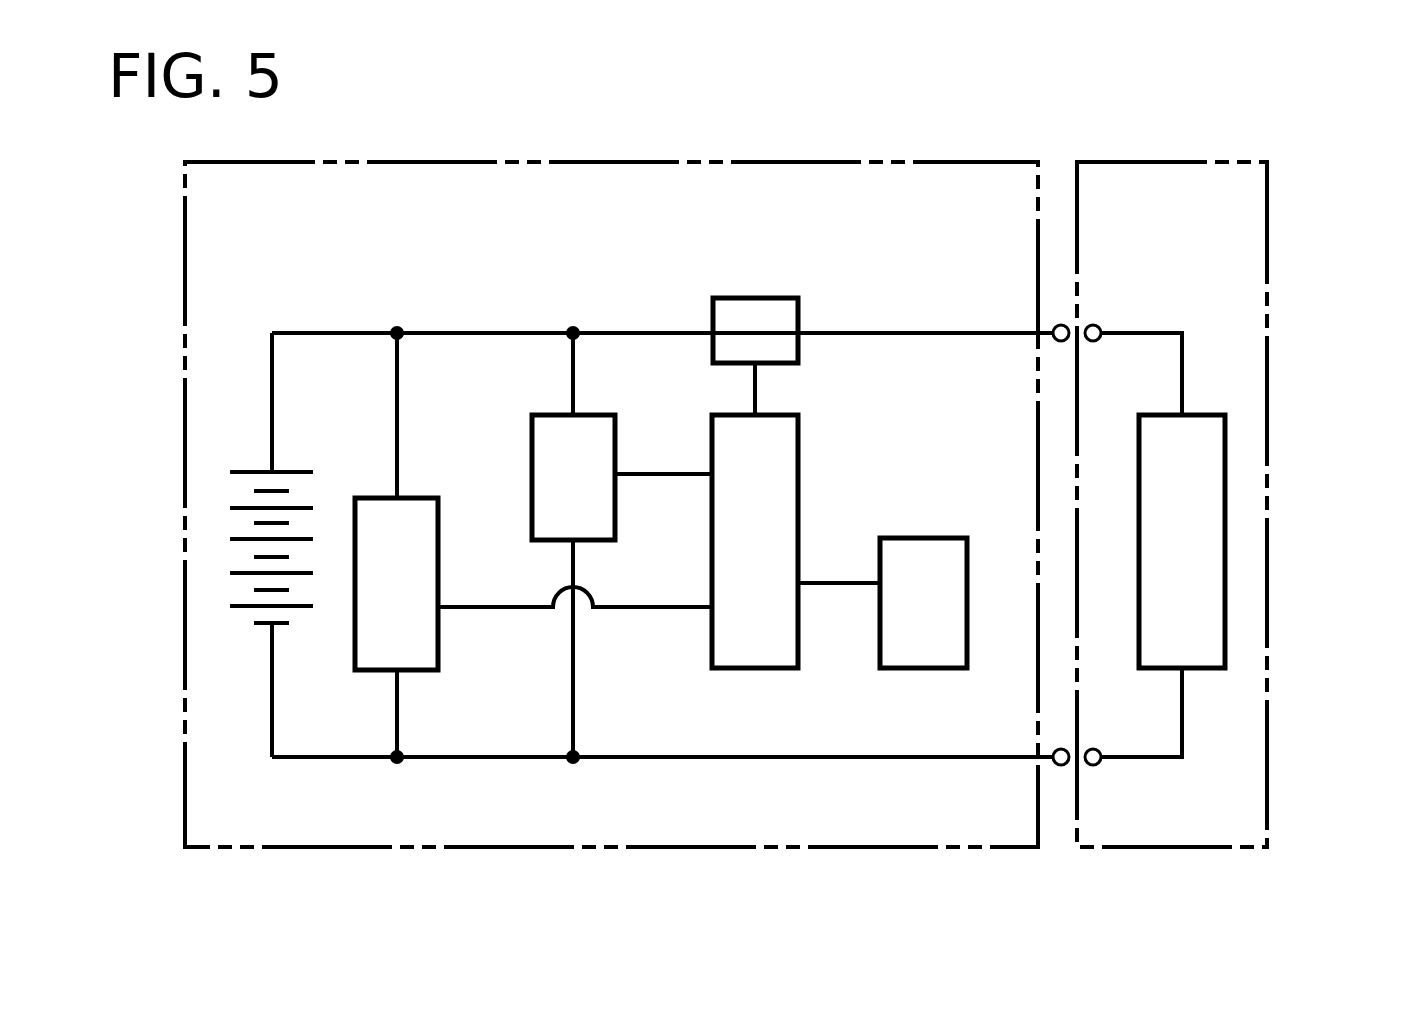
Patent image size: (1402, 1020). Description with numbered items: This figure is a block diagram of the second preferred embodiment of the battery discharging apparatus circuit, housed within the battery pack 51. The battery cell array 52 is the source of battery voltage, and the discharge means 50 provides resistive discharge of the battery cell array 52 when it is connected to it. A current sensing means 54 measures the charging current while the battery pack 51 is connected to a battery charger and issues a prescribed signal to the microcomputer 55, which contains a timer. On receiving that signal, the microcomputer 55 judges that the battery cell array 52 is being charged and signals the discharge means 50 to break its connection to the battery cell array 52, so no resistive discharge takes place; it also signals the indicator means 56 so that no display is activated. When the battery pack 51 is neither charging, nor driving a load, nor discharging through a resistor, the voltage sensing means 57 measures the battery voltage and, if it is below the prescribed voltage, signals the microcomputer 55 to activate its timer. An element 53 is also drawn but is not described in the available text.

The discharge means 50 is at (427, 568).
The battery pack 51 is at (470, 156).
The battery cell array 52 is at (235, 510).
The load device 53 is at (1214, 570).
The current sensing means 54 is at (787, 303).
The microcomputer 55 is at (785, 450).
The indicator means 56 is at (937, 547).
The voltage sensing means 57 is at (548, 417).